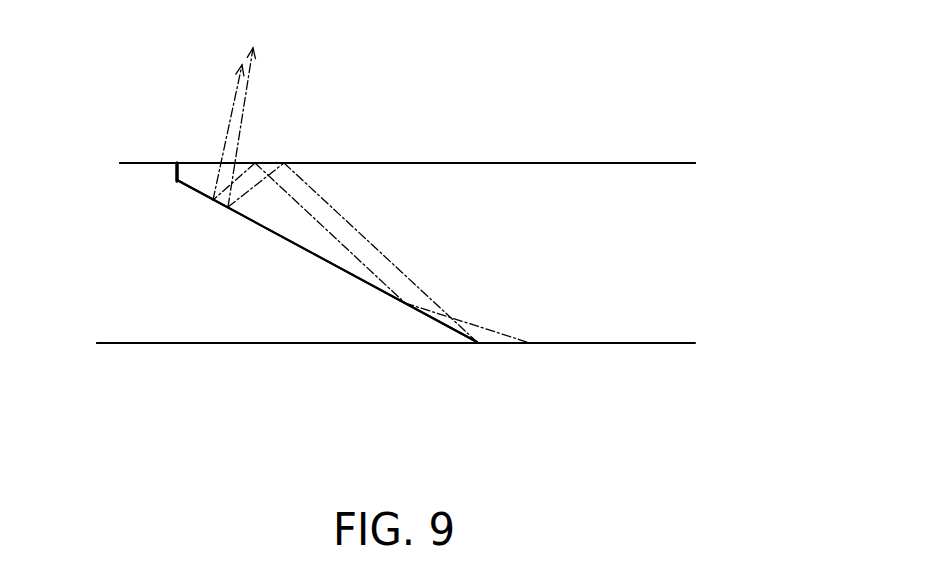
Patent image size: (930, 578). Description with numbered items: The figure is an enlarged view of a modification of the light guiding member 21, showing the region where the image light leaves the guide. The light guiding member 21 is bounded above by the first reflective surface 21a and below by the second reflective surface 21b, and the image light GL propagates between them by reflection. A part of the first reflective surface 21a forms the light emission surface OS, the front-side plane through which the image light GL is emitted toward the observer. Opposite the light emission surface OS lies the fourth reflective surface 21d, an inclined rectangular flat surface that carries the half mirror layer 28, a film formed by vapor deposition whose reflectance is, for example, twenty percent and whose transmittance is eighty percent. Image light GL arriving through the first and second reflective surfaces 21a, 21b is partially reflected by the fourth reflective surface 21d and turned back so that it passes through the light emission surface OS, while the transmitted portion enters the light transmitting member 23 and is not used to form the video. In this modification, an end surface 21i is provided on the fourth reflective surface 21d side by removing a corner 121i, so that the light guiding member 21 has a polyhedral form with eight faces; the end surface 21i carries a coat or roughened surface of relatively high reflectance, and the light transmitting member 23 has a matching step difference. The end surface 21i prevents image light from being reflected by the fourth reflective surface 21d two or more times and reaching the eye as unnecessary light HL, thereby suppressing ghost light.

The light guiding member 21 is at (381, 240).
The first reflective surface 21a is at (570, 163).
The second reflective surface 21b is at (597, 343).
The fourth reflective surface 21d is at (407, 305).
The end surface 21i is at (175, 180).
The corner 121i is at (174, 178).
The light transmitting member 23 is at (208, 343).
The half mirror layer 28 is at (353, 278).
The light emission surface OS is at (335, 163).
The image light GL is at (254, 68).
The unnecessary light HL is at (227, 123).